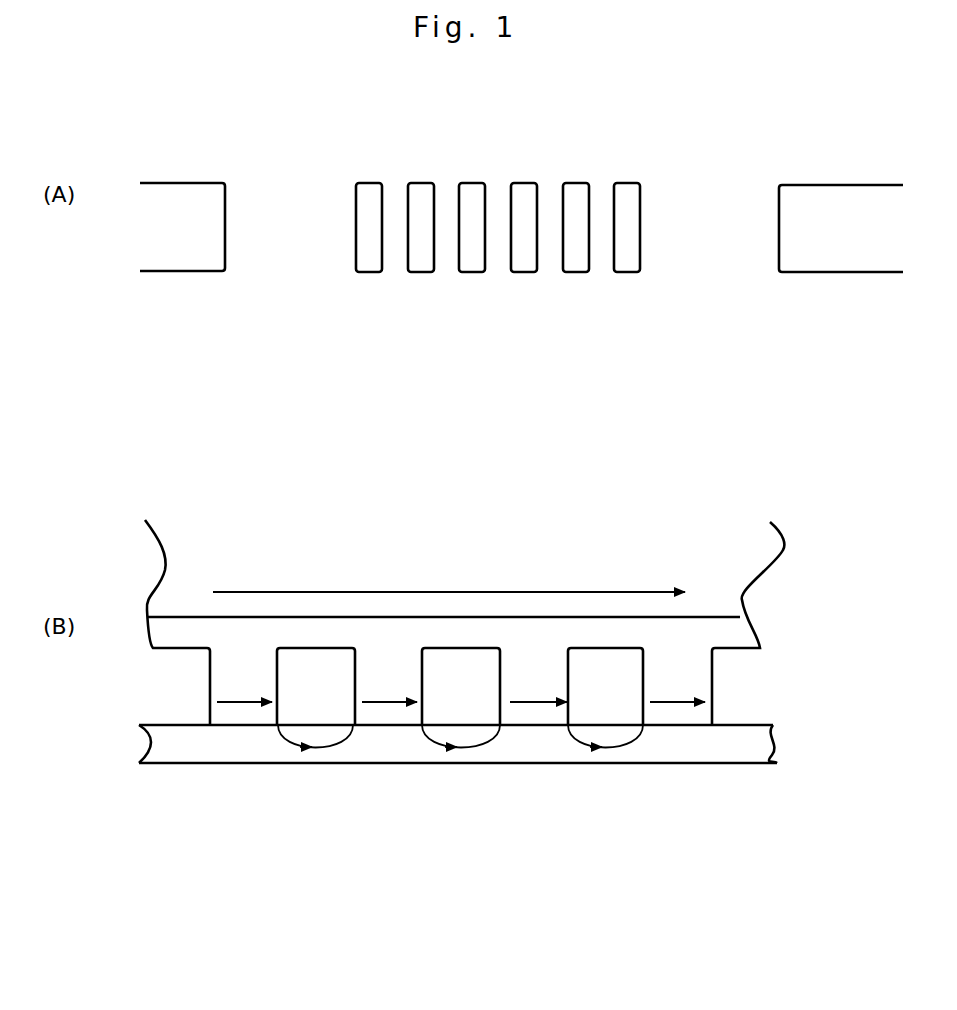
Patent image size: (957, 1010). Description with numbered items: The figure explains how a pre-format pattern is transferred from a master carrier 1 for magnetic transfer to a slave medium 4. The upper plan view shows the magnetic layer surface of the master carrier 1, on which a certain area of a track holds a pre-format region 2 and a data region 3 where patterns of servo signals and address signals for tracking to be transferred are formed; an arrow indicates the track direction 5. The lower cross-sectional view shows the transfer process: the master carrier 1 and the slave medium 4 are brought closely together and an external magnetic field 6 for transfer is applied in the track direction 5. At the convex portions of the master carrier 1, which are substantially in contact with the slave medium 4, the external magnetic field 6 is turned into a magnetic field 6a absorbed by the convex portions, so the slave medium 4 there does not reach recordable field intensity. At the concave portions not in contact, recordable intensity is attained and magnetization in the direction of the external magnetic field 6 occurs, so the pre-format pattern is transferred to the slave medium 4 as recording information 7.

The master carrier for magnetic transfer 1 is at (200, 165).
The pre-format region 2 is at (662, 279).
The data region 3 is at (790, 213).
The slave medium 4 is at (760, 750).
The track direction 5 is at (283, 116).
The external magnetic field for transfer 6 is at (443, 593).
The magnetic field absorbed to the convex portion 6a is at (538, 705).
The recording information 7 is at (445, 753).